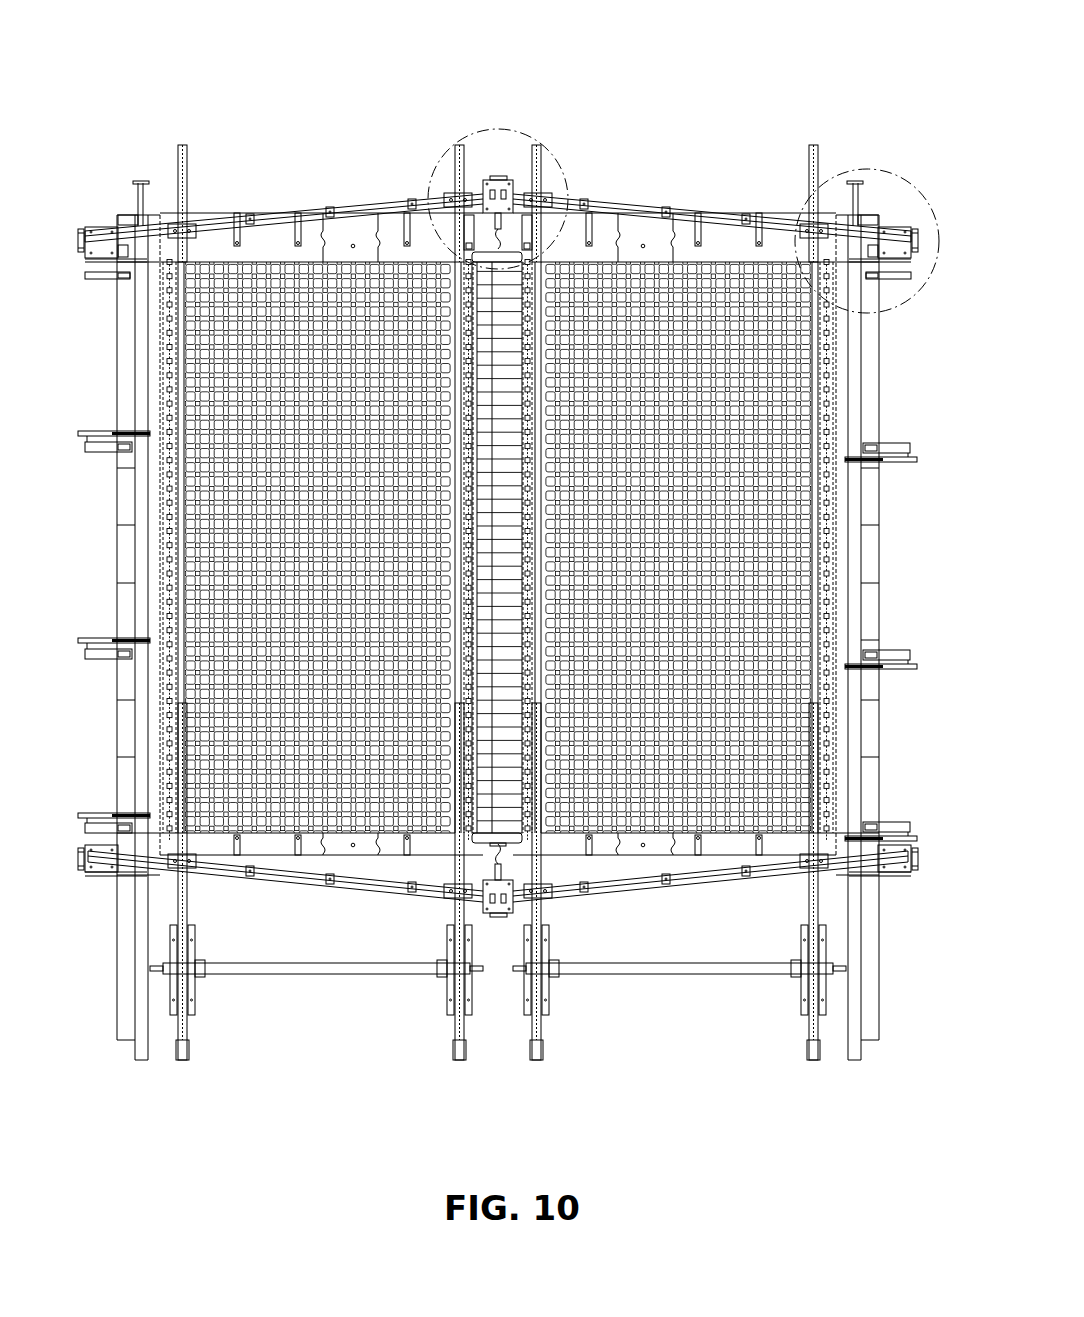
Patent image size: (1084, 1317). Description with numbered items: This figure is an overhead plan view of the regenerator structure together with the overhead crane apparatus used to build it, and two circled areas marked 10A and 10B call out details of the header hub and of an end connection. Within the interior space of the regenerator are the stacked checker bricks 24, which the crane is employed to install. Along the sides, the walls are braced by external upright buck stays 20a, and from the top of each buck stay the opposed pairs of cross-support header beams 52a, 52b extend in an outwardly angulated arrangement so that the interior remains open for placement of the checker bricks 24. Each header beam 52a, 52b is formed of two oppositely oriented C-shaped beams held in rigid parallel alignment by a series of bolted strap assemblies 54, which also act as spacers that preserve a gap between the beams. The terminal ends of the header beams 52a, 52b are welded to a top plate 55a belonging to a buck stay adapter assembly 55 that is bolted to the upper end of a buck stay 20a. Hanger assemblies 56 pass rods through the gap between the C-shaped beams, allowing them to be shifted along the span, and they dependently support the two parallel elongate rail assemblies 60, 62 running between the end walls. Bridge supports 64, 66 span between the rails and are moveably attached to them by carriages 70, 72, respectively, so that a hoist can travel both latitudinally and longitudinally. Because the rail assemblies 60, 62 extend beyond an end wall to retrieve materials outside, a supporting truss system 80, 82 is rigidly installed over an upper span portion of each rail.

The hub region detail 10A is at (597, 130).
The end connection detail 10B is at (873, 168).
The side wall buck stay 20a is at (108, 447).
The checker bricks 24 is at (311, 499).
The cross-support header beam 52a is at (660, 205).
The cross-support header beam 52b is at (298, 213).
The strap assemblies 54 is at (332, 207).
The buck stay adapter assembly 55 is at (502, 182).
The top plate 55a is at (112, 230).
The hanger assemblies 56 is at (457, 196).
The rail assembly 60 is at (541, 198).
The rail assembly 62 is at (448, 192).
The bridge support 64 is at (700, 976).
The bridge support 66 is at (300, 975).
The carriages 70 is at (550, 995).
The carriages 72 is at (194, 950).
The supporting truss system 80 is at (840, 762).
The supporting truss system 82 is at (178, 738).